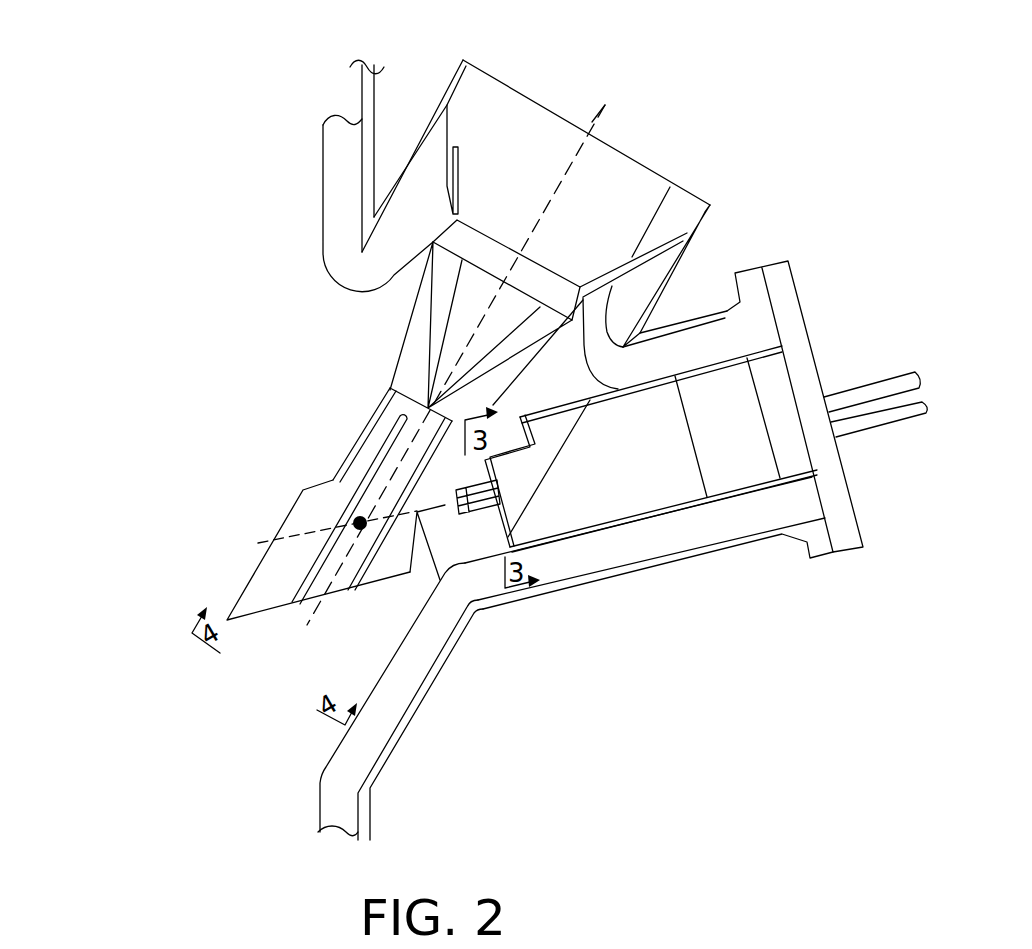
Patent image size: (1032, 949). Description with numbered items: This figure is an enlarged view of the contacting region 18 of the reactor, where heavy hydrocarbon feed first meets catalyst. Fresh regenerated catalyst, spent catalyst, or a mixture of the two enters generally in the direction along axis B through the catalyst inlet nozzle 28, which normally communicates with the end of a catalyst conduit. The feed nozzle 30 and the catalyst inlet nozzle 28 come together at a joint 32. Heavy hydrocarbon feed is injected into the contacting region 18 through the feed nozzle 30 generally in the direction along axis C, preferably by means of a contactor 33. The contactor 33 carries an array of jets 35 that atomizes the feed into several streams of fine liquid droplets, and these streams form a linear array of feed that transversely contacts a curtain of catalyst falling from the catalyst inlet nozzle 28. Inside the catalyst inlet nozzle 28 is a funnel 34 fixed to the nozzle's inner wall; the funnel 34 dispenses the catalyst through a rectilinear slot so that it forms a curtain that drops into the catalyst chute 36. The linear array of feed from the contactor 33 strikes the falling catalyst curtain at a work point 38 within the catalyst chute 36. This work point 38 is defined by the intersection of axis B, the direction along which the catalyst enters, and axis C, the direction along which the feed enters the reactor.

The contacting region 18 is at (264, 322).
The catalyst inlet nozzle 28 is at (435, 170).
The feed nozzle 30 is at (708, 520).
The joint 32 is at (642, 333).
The contactor 33 is at (606, 505).
The funnel 34 is at (445, 307).
The jets 35 is at (474, 508).
The catalyst chute 36 is at (325, 508).
The work point 38 is at (352, 523).
The axis B is at (592, 122).
The axis C is at (418, 528).